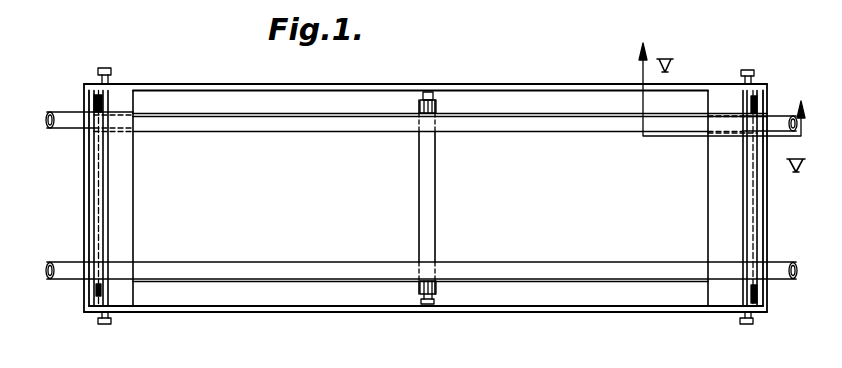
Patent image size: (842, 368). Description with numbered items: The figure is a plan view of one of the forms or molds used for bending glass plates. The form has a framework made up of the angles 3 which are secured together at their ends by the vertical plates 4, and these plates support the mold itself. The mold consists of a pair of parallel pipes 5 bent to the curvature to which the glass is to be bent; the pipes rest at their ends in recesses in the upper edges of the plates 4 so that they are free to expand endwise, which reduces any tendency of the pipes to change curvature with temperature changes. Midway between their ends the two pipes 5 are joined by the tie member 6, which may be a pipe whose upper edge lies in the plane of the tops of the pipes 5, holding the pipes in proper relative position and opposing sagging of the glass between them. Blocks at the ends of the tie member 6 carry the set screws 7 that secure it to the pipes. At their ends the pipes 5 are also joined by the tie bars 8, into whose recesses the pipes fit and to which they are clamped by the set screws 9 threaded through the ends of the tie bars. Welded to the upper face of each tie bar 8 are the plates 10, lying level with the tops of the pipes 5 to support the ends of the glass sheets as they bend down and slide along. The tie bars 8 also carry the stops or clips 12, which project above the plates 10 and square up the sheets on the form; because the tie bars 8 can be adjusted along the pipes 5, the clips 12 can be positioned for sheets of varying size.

The angles 3 is at (525, 105).
The vertical plates 4 is at (85, 199).
The parallel pipes 5 is at (528, 122).
The tie member 6 is at (428, 178).
The set screws 7 is at (434, 96).
The tie bars 8 is at (108, 230).
The set screws 9 is at (110, 70).
The plates 10 is at (120, 209).
The stops or clips 12 is at (100, 107).